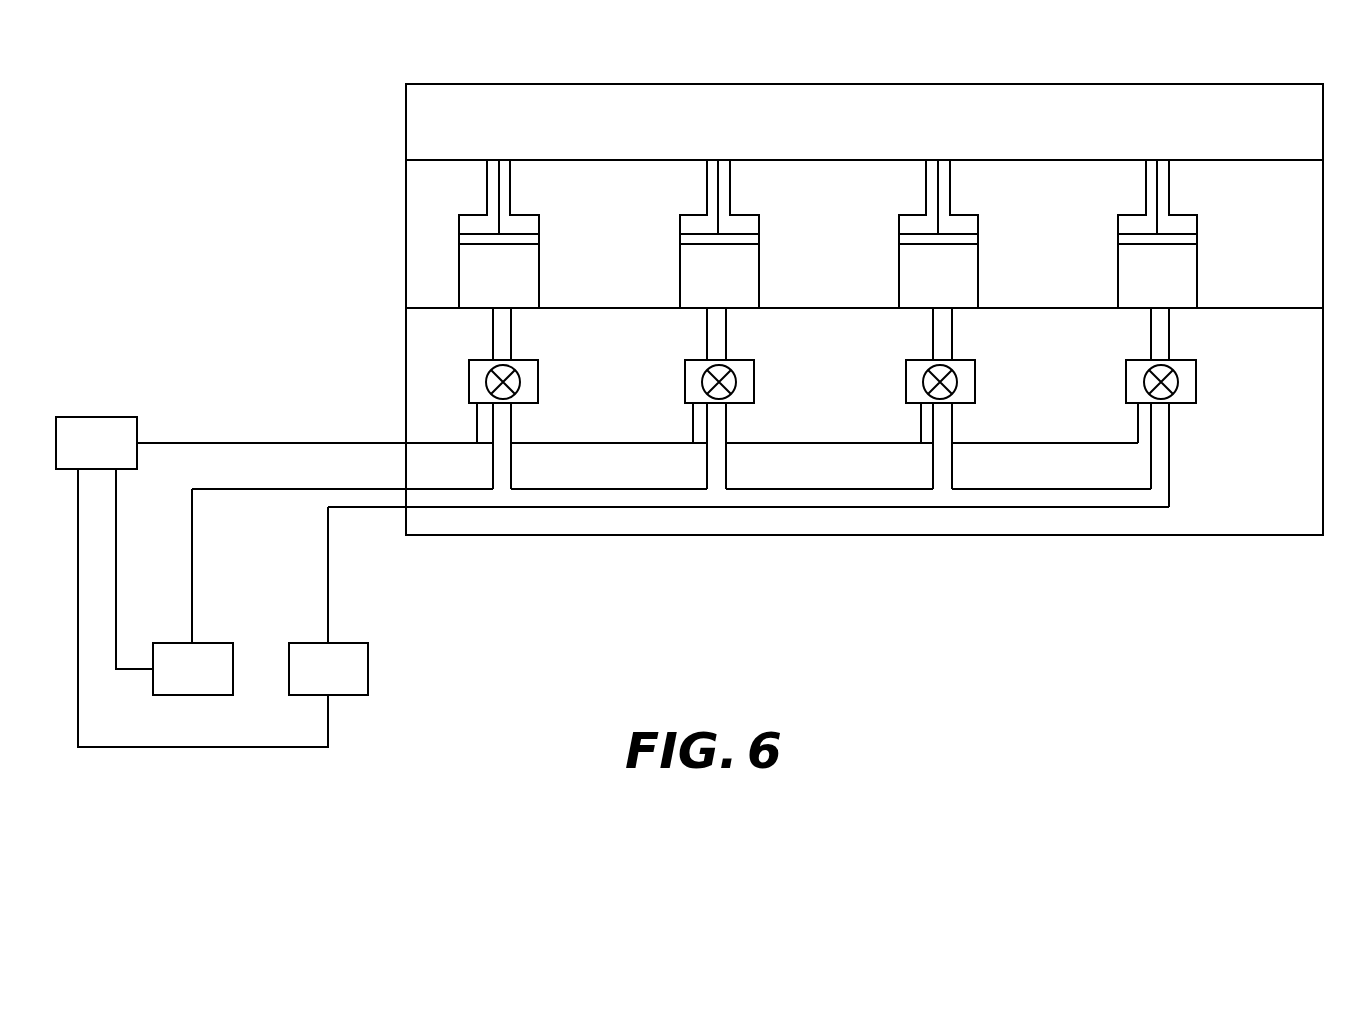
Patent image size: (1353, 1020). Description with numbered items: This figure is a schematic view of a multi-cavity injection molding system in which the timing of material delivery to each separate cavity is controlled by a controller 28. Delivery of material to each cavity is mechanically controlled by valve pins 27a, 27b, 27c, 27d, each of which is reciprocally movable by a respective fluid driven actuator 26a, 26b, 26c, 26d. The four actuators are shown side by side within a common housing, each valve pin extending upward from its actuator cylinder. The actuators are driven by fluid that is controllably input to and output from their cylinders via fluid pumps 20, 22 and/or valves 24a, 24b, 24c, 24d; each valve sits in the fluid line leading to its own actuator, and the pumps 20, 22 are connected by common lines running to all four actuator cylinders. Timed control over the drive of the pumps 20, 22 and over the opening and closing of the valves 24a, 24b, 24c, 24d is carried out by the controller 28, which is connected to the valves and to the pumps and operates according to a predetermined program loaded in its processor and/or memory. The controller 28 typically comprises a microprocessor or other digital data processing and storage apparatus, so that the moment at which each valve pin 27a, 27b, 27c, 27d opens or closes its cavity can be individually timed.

The fluid pump 20 is at (233, 643).
The fluid pump 22 is at (368, 643).
The valve 24a is at (538, 360).
The valve 24b is at (754, 360).
The valve 24c is at (975, 360).
The valve 24d is at (1196, 360).
The fluid driven actuator 26a is at (540, 262).
The fluid driven actuator 26b is at (760, 262).
The fluid driven actuator 26c is at (979, 262).
The fluid driven actuator 26d is at (1198, 262).
The valve pin 27a is at (512, 190).
The valve pin 27b is at (732, 190).
The valve pin 27c is at (952, 190).
The valve pin 27d is at (1171, 190).
The controller 28 is at (137, 417).